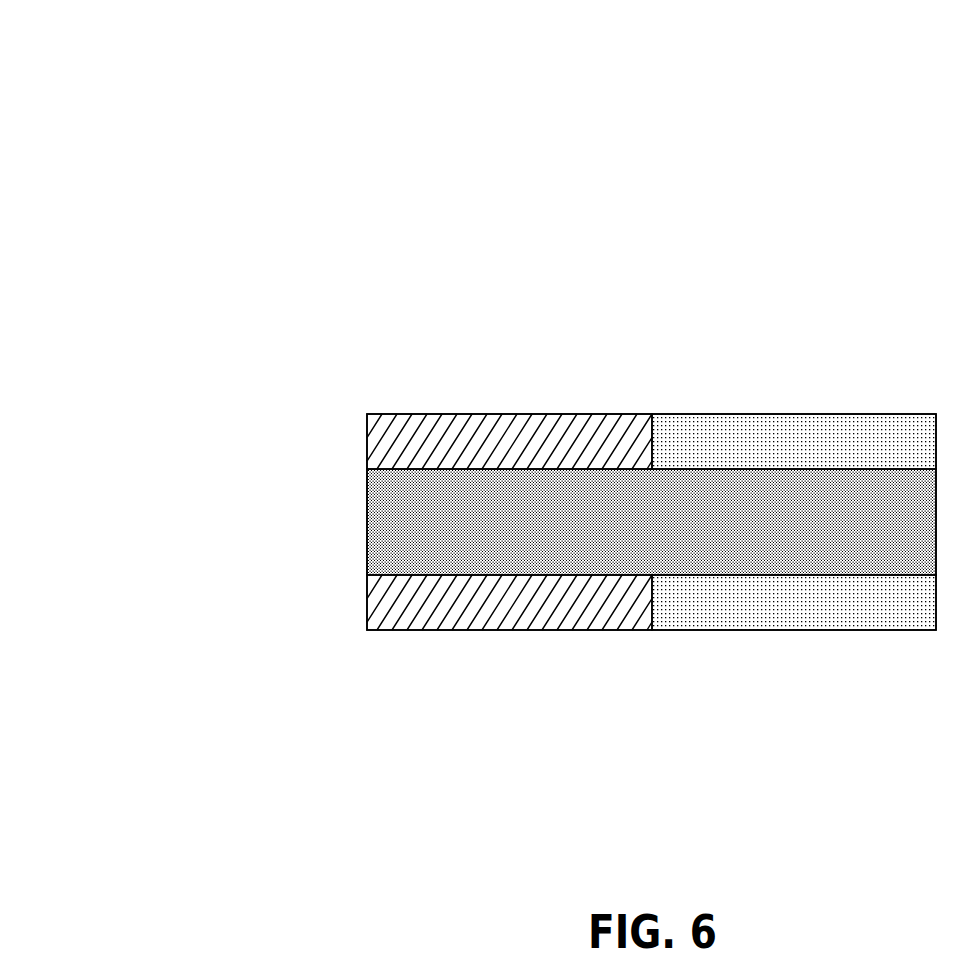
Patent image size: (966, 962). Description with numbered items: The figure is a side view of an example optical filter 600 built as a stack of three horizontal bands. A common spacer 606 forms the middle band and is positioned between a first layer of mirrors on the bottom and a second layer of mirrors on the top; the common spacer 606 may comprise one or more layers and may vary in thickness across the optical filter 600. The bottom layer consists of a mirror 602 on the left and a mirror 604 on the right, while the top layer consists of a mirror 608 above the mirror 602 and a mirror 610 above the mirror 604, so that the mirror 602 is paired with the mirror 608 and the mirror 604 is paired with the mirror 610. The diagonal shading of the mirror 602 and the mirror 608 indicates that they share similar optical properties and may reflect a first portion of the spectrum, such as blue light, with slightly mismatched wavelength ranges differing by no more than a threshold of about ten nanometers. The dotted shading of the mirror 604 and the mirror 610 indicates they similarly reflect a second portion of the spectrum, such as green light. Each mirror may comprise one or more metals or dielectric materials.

The optical filter 600 is at (146, 54).
The mirror 602 is at (490, 630).
The mirror 604 is at (775, 630).
The common spacer 606 is at (670, 533).
The mirror 608 is at (508, 417).
The mirror 610 is at (784, 417).